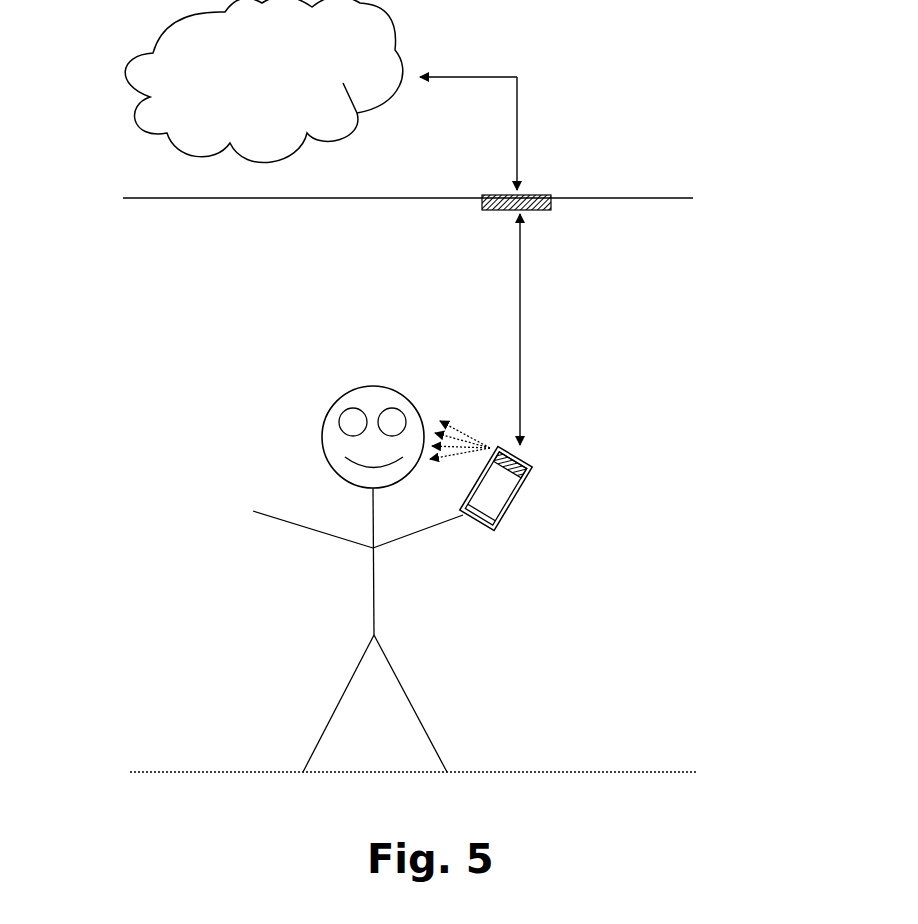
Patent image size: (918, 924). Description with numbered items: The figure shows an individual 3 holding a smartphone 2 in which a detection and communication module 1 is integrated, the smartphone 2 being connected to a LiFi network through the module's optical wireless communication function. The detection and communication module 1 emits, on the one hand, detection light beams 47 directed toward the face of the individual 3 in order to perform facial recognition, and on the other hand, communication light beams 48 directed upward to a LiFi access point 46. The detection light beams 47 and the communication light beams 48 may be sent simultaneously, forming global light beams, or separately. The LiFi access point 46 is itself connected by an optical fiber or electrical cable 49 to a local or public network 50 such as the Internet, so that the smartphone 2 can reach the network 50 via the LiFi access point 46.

The detection and communication module 1 is at (527, 457).
The smartphone 2 is at (495, 490).
The individual 3 is at (375, 595).
The LiFi access point 46 is at (539, 195).
The detection light beams 47 is at (455, 429).
The communication light beams 48 is at (520, 362).
The optical fiber or electrical cable 49 is at (517, 135).
The local or public network 50 is at (264, 81).